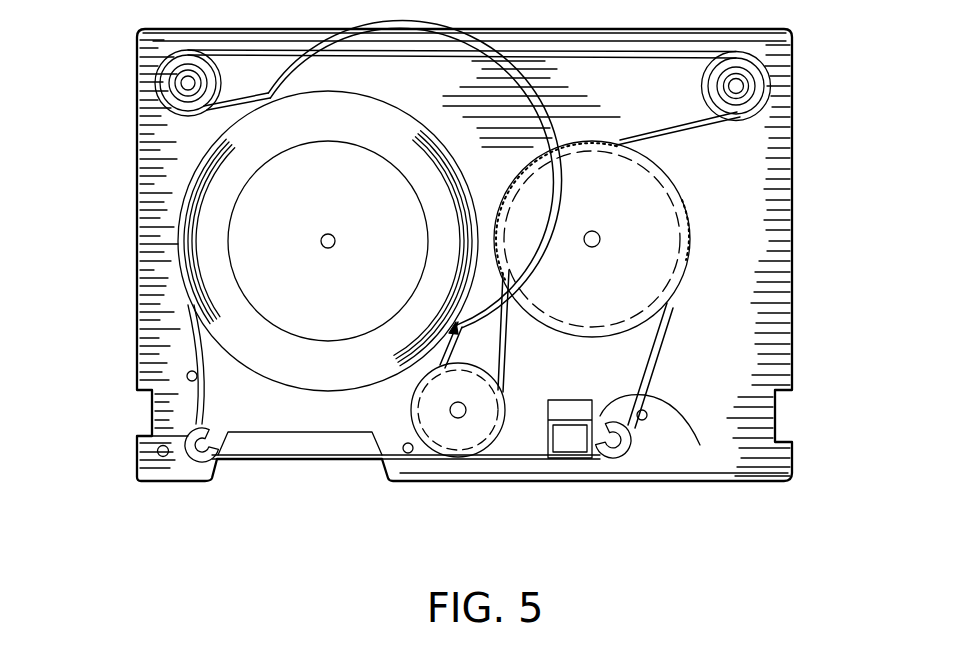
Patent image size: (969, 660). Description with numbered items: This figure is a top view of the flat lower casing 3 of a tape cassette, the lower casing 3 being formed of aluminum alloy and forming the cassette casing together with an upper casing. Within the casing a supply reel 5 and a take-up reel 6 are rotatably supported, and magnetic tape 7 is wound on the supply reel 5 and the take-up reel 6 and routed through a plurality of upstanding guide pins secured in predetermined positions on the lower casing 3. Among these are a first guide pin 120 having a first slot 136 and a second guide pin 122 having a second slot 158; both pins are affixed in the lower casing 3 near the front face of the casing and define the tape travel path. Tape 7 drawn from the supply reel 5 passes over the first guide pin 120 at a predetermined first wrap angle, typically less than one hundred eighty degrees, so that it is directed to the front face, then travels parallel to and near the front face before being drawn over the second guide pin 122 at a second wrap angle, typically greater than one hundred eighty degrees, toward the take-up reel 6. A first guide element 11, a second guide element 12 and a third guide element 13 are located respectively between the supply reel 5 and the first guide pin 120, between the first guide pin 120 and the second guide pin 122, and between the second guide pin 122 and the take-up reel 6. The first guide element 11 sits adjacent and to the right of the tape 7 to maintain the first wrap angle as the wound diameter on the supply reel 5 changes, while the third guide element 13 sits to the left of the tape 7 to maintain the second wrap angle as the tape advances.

The lower casing 3 is at (793, 230).
The supply reel 5 is at (662, 263).
The take-up reel 6 is at (240, 232).
The magnetic tape 7 is at (194, 313).
The first guide element 11 is at (643, 420).
The second guide element 12 is at (408, 454).
The third guide element 13 is at (187, 377).
The first guide pin 120 is at (607, 460).
The second guide pin 122 is at (203, 461).
The first slot 136 is at (700, 445).
The second slot 158 is at (185, 437).